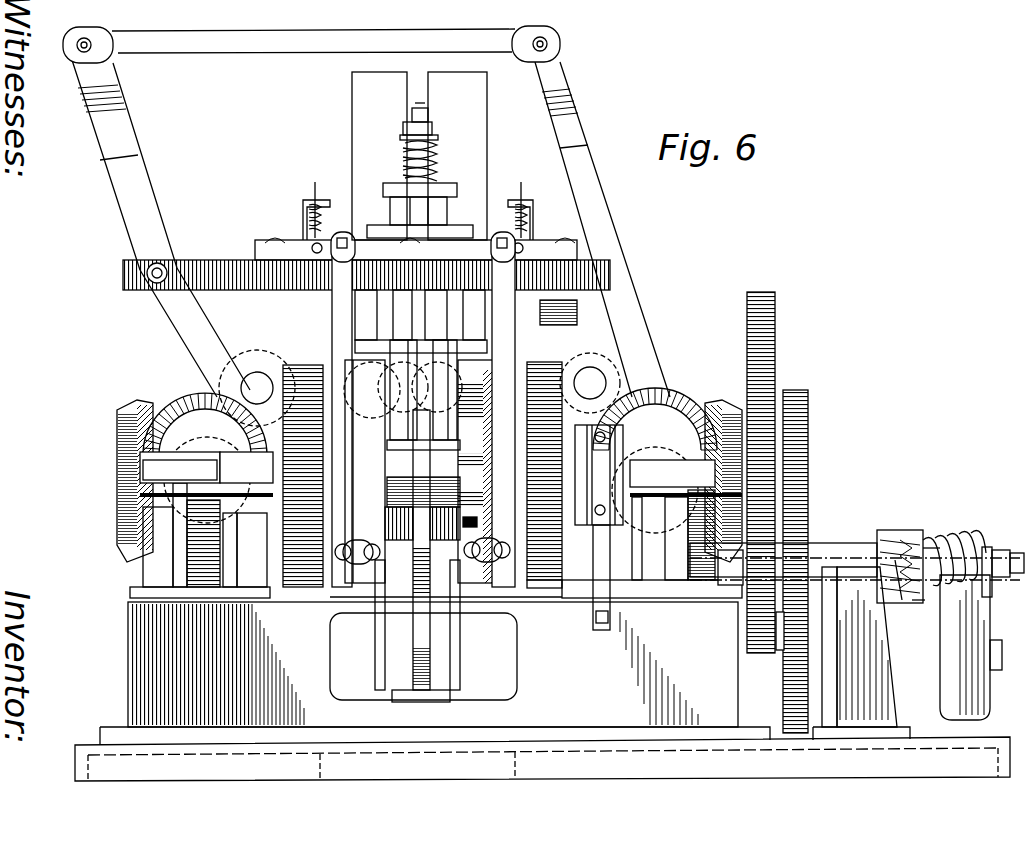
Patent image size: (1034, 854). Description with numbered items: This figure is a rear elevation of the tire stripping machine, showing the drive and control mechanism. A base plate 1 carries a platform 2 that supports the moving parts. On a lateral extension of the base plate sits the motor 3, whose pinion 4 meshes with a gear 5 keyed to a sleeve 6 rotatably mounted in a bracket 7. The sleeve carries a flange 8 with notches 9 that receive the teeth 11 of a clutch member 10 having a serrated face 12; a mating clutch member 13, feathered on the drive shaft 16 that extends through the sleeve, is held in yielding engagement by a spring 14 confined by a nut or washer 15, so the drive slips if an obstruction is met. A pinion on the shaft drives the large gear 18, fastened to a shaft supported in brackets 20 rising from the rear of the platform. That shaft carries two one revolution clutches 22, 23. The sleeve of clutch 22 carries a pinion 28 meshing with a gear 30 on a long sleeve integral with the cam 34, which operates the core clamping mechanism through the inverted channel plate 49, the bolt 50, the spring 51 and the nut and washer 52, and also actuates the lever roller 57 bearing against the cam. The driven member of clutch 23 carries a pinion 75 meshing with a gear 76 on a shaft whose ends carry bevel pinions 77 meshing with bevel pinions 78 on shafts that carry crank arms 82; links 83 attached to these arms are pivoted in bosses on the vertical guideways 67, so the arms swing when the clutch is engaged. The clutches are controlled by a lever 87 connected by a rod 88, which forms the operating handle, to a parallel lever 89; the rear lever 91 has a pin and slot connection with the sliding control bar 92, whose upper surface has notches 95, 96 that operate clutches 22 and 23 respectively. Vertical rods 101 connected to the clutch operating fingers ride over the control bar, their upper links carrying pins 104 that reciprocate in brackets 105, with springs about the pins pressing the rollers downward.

The base plate 1 is at (128, 755).
The platform 2 is at (433, 664).
The motor 3 is at (953, 647).
The pinion 4 is at (782, 652).
The gear 5 is at (808, 402).
The sleeve 6 is at (825, 568).
The bracket 7 is at (861, 653).
The flange 8 is at (883, 530).
The notches 9 is at (898, 603).
The clutch member 10 is at (903, 540).
The teeth 11 is at (930, 548).
The serrated face 12 is at (940, 540).
The mating clutch member 13 is at (920, 600).
The spring 14 is at (988, 550).
The nut or washer 15 is at (998, 578).
The drive shaft 16 is at (1017, 575).
The large gear 18 is at (776, 300).
The brackets 20 is at (190, 592).
The one revolution clutch 22 is at (520, 612).
The one revolution clutch 23 is at (312, 615).
The pinion 28 is at (527, 472).
The gear 30 is at (545, 588).
The cam 34 is at (435, 420).
The inverted channel plate 49 is at (450, 183).
The bolt 50 is at (426, 108).
The spring 51 is at (437, 145).
The nut and washer 52 is at (432, 128).
The roller 57 is at (440, 670).
The vertical guideway 67 is at (352, 101).
The pinion 75 is at (283, 505).
The gear 76 is at (295, 590).
The bevel pinions 77 is at (150, 410).
The bevel pinions 78 is at (117, 438).
The crank arms 82 is at (253, 385).
The links 83 is at (270, 330).
The lever 87 is at (147, 175).
The rod 88 is at (285, 50).
The lever 89 is at (600, 190).
The lever 91 is at (160, 328).
The control bar 92 is at (218, 264).
The notch 95 is at (482, 290).
The notch 96 is at (270, 292).
The vertical rod 101 is at (333, 335).
The pins 104 is at (316, 192).
The brackets 105 is at (303, 208).